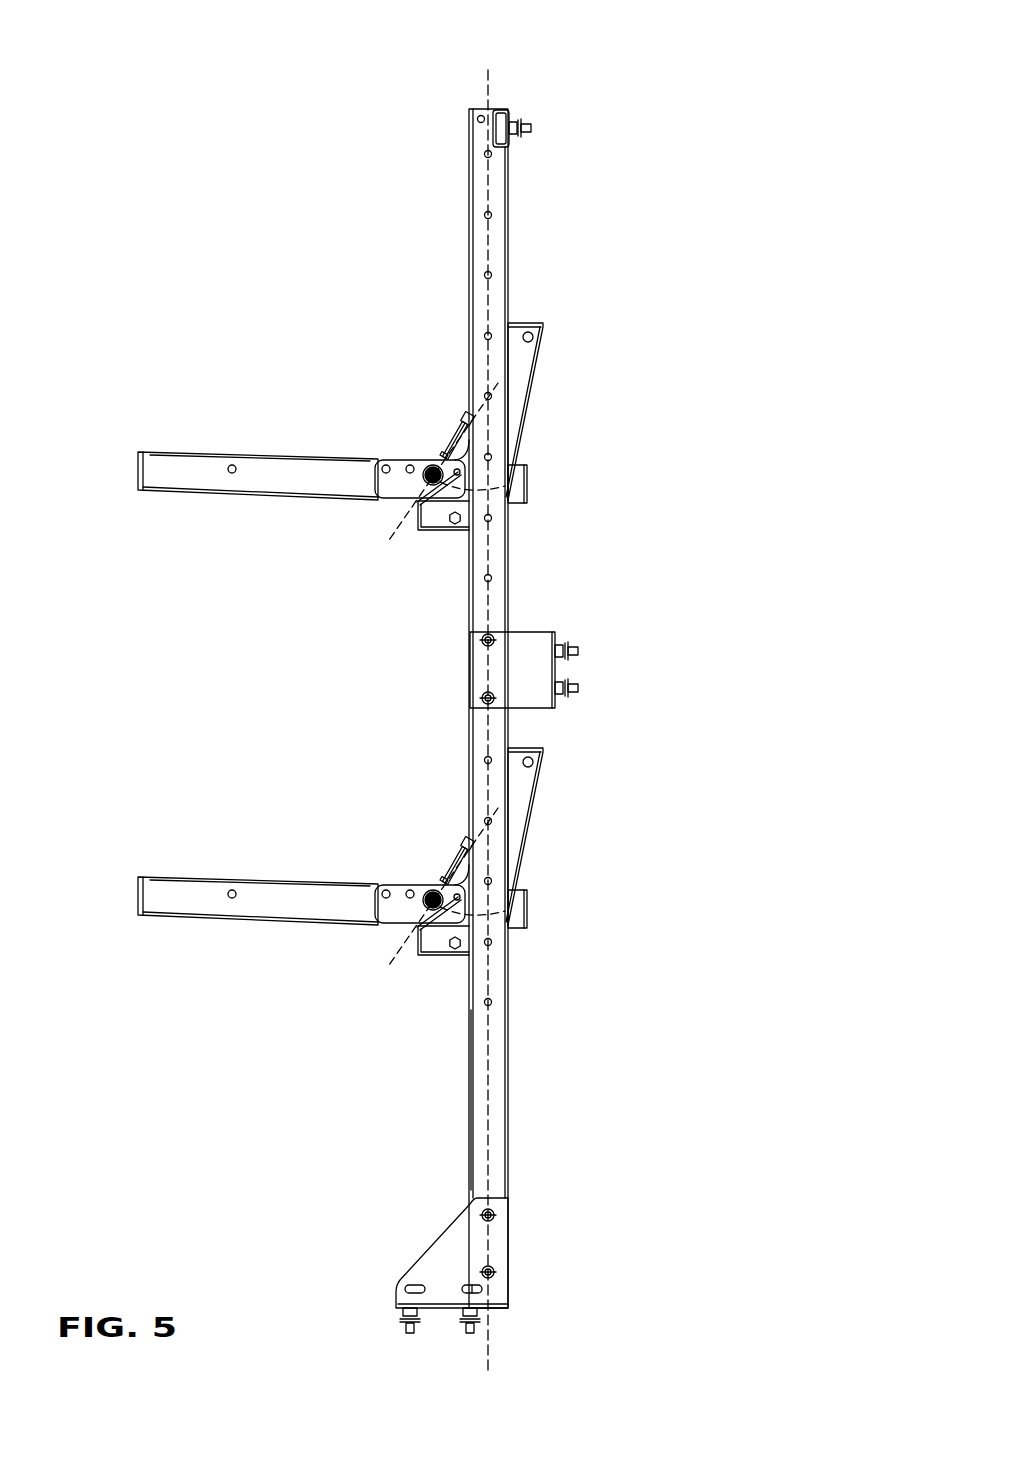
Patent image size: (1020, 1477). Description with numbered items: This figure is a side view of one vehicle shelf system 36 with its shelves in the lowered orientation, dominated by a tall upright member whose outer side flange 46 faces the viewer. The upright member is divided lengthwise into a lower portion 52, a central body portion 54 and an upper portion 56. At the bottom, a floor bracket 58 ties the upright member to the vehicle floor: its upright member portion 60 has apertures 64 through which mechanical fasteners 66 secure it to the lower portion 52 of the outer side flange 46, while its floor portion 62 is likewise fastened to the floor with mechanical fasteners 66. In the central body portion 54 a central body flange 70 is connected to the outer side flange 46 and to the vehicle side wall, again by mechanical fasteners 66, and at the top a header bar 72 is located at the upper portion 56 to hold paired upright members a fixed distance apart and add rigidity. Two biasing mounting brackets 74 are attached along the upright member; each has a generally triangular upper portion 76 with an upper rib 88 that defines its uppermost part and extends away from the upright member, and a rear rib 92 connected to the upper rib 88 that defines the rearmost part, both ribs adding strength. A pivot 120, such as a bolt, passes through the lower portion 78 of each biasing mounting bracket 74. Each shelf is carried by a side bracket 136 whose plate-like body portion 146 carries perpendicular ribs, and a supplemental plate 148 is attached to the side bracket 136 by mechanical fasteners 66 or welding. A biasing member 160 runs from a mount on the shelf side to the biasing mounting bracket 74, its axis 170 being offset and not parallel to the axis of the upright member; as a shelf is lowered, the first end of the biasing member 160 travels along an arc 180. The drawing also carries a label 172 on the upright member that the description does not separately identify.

The vehicle shelf system 36 is at (490, 74).
The outer side flange 46 is at (488, 182).
The lower portion 52 is at (572, 1049).
The central body portion 54 is at (614, 608).
The upper portion 56 is at (620, 229).
The floor bracket 58 is at (436, 1250).
The upright member portion 60 is at (524, 1212).
The floor portion 62 is at (376, 1296).
The apertures 64 is at (490, 1208).
The mechanical fasteners 66 is at (495, 1222).
The central body flange 70 is at (542, 630).
The header bar 72 is at (506, 108).
The biasing mounting bracket 74 is at (530, 377).
The upper portion 76 is at (570, 312).
The lower portion 78 is at (405, 548).
The upper rib 88 is at (529, 322).
The rear rib 92 is at (532, 398).
The pivot 120 is at (455, 526).
The side bracket 136 is at (194, 484).
The body portion 146 is at (300, 470).
The supplemental plate 148 is at (402, 468).
The biasing member 160 is at (462, 420).
The axis 170 is at (400, 524).
The post wall 172 is at (490, 978).
The arc 180 is at (500, 486).